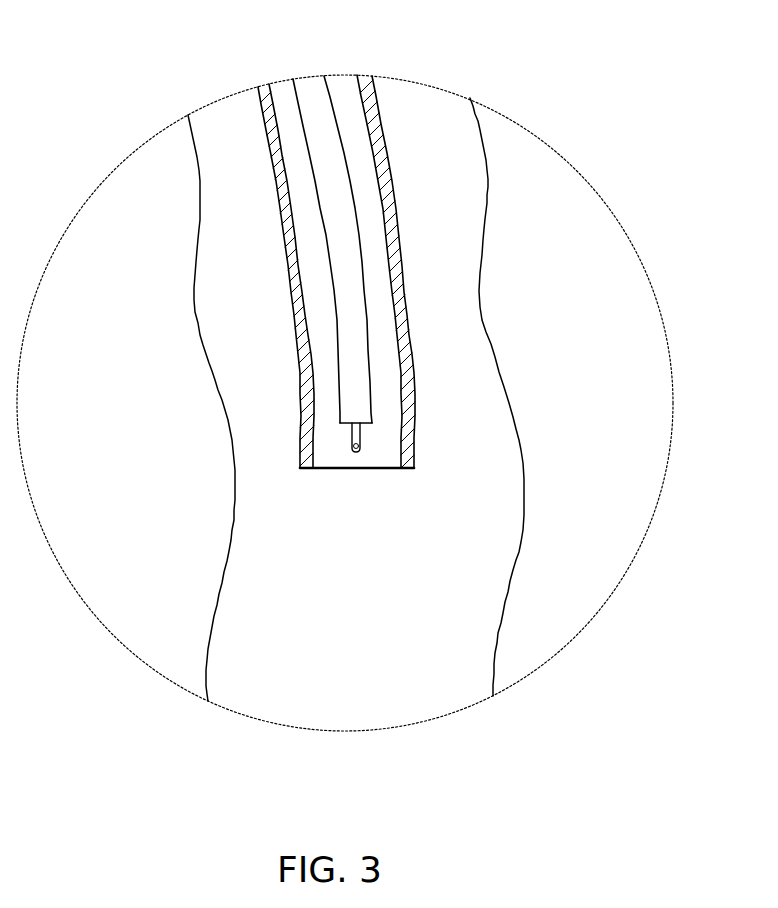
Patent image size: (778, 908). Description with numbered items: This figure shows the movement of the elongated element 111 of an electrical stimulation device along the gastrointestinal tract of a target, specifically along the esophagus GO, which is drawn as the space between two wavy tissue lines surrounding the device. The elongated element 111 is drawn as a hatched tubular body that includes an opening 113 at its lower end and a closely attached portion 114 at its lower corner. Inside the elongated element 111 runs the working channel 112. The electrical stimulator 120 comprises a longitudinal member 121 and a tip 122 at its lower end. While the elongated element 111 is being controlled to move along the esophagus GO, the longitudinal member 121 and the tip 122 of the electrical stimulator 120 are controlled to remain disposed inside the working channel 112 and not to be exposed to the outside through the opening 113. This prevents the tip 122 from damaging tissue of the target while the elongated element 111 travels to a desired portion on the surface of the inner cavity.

The elongated element 111 is at (398, 290).
The working channel 112 is at (365, 178).
The opening 113 is at (333, 472).
The closely attached portion 114 is at (405, 469).
The electrical stimulator 120 is at (380, 378).
The longitudinal member 121 is at (347, 352).
The tip 122 is at (352, 433).
The esophagus GO is at (376, 645).